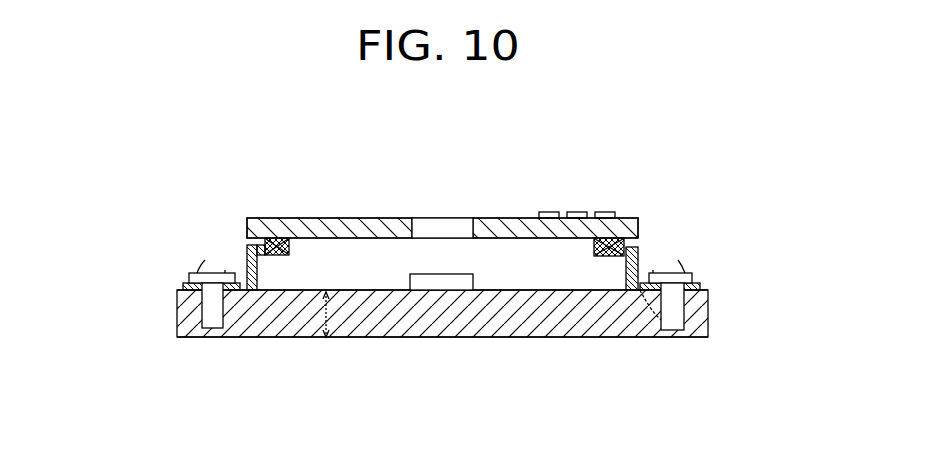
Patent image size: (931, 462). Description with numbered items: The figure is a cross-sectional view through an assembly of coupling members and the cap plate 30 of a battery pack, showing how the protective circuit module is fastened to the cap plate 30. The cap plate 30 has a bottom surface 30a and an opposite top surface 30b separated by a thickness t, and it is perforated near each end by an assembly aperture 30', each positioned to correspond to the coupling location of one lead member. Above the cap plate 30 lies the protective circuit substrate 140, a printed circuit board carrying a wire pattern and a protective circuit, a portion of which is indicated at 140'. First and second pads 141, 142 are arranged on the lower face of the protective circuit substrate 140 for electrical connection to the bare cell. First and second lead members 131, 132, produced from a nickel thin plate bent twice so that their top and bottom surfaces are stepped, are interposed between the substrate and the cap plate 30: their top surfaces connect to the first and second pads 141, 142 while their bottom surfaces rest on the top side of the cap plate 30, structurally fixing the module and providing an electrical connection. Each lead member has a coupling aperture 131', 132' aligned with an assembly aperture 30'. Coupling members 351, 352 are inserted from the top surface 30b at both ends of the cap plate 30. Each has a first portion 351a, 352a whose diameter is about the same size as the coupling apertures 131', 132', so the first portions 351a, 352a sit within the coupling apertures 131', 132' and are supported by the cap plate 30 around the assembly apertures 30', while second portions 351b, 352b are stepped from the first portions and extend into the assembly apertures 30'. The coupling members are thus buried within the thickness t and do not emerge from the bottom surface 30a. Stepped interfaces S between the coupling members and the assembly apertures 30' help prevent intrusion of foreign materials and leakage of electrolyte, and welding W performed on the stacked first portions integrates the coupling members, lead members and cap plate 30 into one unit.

The cap plate 30 is at (442, 347).
The bottom surface of the cap plate 30a is at (517, 338).
The top surface of the cap plate 30b is at (517, 292).
The assembly aperture 30' is at (443, 343).
The thickness of the cap plate t is at (334, 314).
The stepped interface S is at (655, 300).
The protective circuit substrate 140 is at (442, 191).
The window portion of package body 140' is at (442, 191).
The first lead member 131 is at (603, 217).
The second lead member 132 is at (282, 217).
The first pad 141 is at (612, 243).
The second pad 142 is at (272, 240).
The coupling aperture of the first lead member 131' is at (697, 244).
The coupling aperture of the second lead member 132' is at (189, 244).
The wire W is at (225, 272).
The coupling member 351 is at (736, 303).
The first portion of the coupling member 351a is at (692, 280).
The second portion of the coupling member 351b is at (680, 312).
The coupling member 352 is at (147, 301).
The first portion of the coupling member 352a is at (189, 278).
The second portion of the coupling member 352b is at (195, 305).